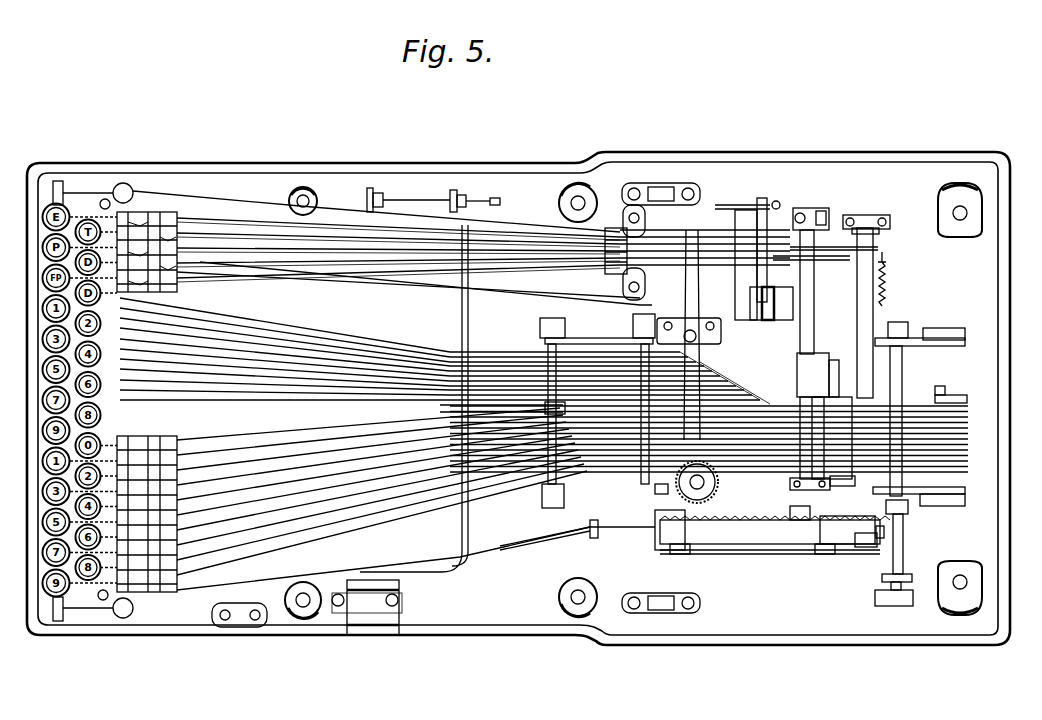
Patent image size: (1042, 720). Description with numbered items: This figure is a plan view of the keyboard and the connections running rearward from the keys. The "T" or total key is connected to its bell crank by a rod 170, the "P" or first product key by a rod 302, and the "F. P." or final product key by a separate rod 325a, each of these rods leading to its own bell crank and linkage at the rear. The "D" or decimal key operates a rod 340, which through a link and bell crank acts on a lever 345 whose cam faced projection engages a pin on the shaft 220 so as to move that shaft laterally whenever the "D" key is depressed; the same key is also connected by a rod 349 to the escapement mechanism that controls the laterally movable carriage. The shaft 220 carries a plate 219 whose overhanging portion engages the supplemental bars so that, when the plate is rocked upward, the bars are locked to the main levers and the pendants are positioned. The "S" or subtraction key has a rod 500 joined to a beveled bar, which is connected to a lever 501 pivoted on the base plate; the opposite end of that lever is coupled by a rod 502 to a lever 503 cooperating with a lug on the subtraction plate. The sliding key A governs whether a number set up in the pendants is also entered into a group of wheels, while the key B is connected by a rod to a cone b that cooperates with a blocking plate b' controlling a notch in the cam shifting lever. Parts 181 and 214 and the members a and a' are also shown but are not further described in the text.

The rod 170 is at (244, 233).
The rod 302 is at (216, 250).
The rod 325a is at (249, 272).
The rod 340 is at (316, 268).
The rod 349 is at (425, 288).
The rod 500 is at (553, 230).
The lever 501 is at (702, 344).
The rod 502 is at (795, 400).
The lever 503 is at (966, 376).
The block 181 is at (771, 314).
The post 214 is at (832, 353).
The plate 219 is at (843, 377).
The shaft 220 is at (868, 310).
The lever 345 is at (829, 276).
The key A is at (458, 192).
The key B is at (366, 192).
The member a is at (782, 188).
The member a' is at (811, 205).
The cone b is at (747, 247).
The blocking plate b' is at (734, 290).